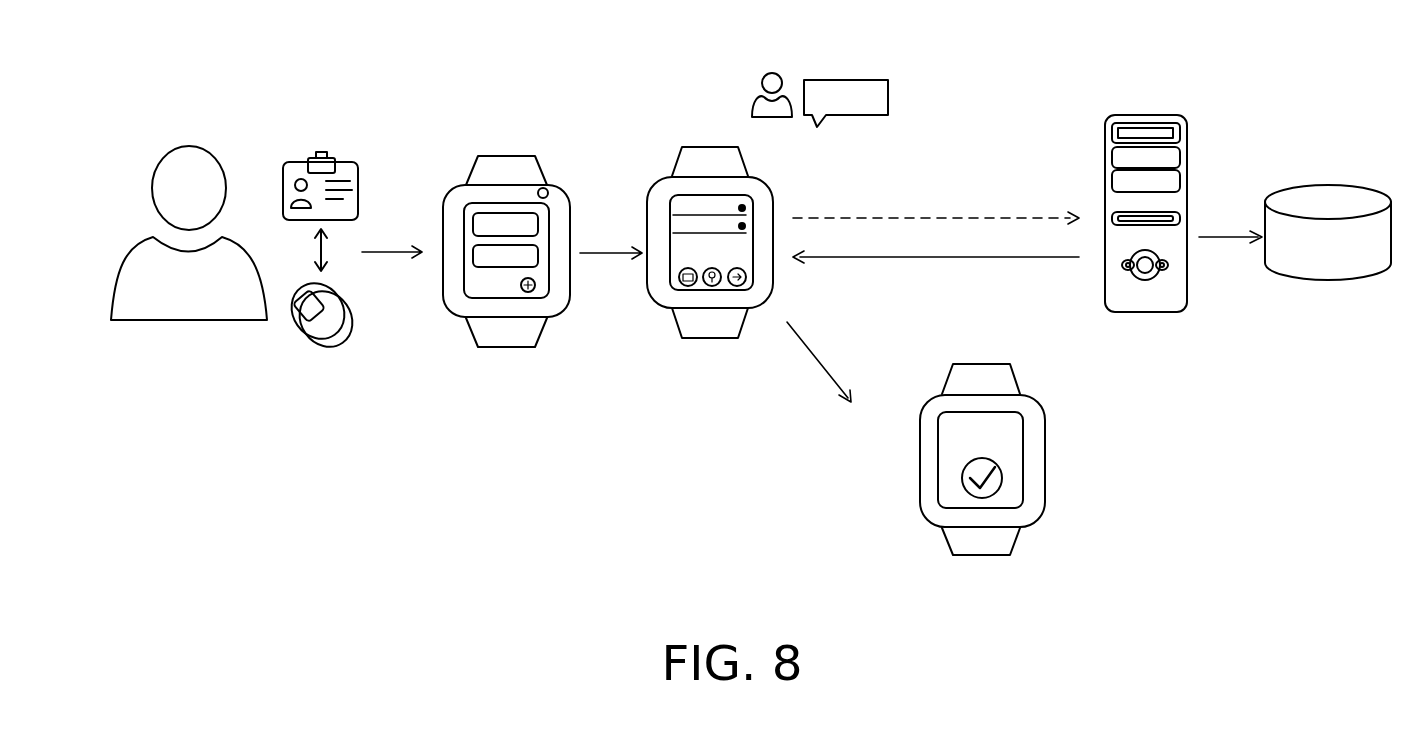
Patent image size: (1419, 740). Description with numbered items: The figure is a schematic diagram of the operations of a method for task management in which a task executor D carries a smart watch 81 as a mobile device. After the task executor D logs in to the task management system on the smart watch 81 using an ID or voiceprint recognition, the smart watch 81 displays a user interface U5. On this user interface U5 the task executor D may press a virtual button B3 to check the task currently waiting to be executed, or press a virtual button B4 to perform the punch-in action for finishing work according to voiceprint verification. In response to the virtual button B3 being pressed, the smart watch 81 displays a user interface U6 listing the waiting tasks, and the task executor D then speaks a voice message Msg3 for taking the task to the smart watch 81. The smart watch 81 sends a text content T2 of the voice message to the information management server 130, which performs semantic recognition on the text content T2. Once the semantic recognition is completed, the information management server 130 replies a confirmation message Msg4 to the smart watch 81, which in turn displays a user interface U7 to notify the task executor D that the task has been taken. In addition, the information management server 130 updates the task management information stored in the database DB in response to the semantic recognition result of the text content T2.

The task executor D is at (173, 323).
The smart watch 81 is at (335, 348).
The user interface U5 is at (462, 280).
The virtual button B3 is at (540, 225).
The virtual button B4 is at (540, 254).
The user interface U6 is at (667, 220).
The user interface U7 is at (935, 432).
The voice message Msg3 is at (859, 80).
The confirmation message Msg4 is at (936, 277).
The text content T2 is at (936, 199).
The information management server 130 is at (1145, 113).
The database DB is at (1328, 282).